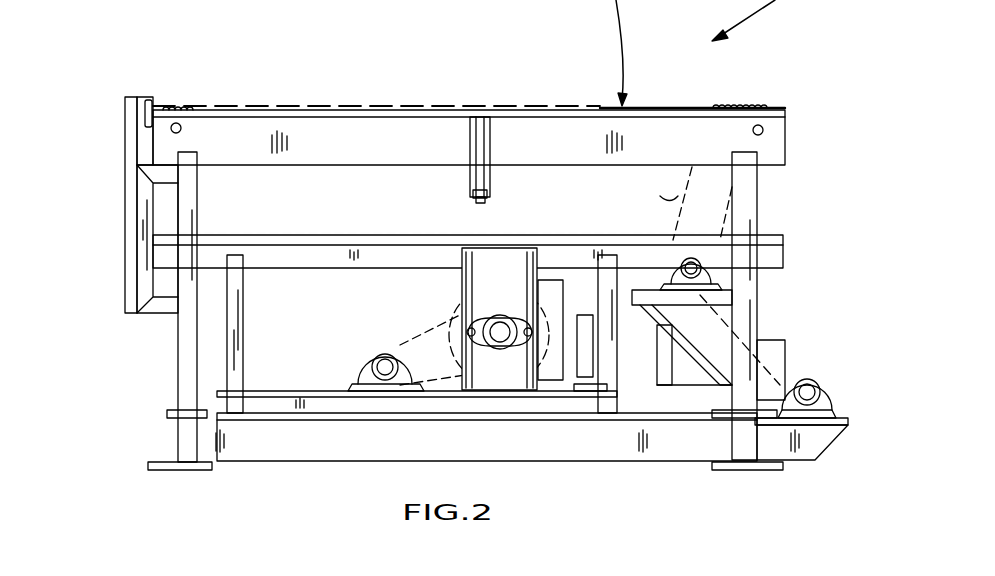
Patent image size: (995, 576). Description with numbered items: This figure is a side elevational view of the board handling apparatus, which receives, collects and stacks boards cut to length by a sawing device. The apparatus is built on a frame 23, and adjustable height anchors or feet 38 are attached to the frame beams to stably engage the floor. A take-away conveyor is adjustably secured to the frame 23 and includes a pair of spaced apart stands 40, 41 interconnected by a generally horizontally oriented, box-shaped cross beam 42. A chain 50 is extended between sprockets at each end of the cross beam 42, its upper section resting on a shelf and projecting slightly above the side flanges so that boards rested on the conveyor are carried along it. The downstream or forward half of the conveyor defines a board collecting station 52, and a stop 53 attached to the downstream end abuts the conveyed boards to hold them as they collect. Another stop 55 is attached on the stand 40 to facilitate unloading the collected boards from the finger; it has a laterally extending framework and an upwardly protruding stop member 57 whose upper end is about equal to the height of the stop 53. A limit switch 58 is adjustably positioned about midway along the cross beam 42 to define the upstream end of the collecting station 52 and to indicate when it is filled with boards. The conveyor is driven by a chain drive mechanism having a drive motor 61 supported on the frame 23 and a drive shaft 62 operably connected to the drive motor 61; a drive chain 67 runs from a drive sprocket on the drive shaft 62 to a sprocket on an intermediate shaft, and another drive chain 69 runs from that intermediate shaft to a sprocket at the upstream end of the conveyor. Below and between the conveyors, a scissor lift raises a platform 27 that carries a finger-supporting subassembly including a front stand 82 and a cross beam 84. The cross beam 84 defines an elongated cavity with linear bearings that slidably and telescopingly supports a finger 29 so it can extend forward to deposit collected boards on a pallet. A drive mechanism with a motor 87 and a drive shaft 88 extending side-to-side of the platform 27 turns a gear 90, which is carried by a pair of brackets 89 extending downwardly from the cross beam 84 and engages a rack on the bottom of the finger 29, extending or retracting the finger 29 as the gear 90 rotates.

The frame 23 is at (627, 463).
The platform 27 is at (261, 391).
The finger 29 is at (293, 233).
The feet 38 is at (163, 472).
The stand 40 is at (178, 360).
The stand 41 is at (752, 203).
The cross beam 42 is at (405, 133).
The chain 50 is at (535, 106).
The board collecting station 52 is at (256, 95).
The stop 53 is at (150, 98).
The stop 55 is at (125, 233).
The stop member 57 is at (125, 120).
The limit switch 58 is at (477, 143).
The drive motor 61 is at (690, 385).
The drive shaft 62 is at (808, 393).
The drive chain 67 is at (767, 310).
The drive chain 69 is at (682, 235).
The front stand 82 is at (243, 303).
The cross beam 84 is at (337, 253).
The motor 87 is at (558, 290).
The drive shaft 88 is at (366, 353).
The brackets 89 is at (534, 319).
The gear 90 is at (457, 308).